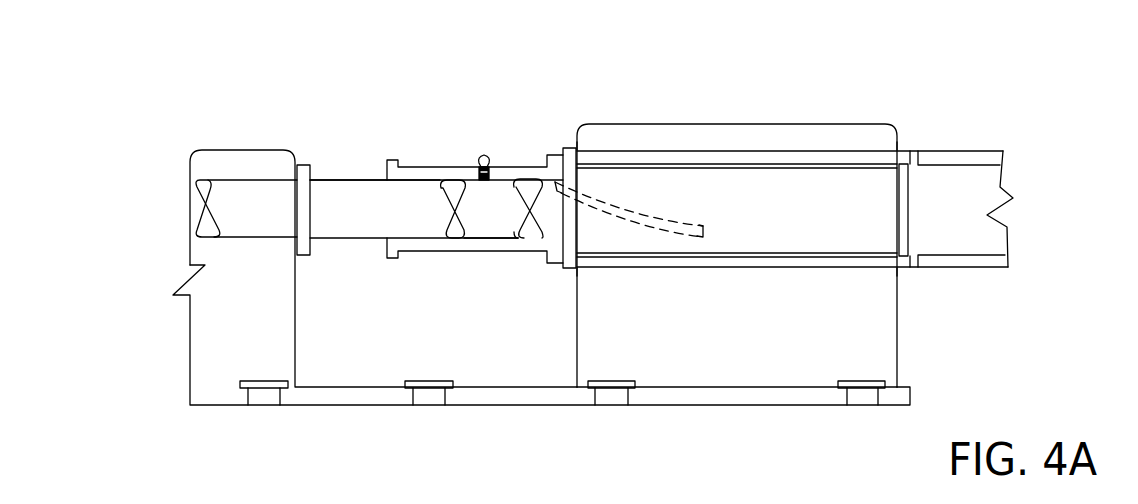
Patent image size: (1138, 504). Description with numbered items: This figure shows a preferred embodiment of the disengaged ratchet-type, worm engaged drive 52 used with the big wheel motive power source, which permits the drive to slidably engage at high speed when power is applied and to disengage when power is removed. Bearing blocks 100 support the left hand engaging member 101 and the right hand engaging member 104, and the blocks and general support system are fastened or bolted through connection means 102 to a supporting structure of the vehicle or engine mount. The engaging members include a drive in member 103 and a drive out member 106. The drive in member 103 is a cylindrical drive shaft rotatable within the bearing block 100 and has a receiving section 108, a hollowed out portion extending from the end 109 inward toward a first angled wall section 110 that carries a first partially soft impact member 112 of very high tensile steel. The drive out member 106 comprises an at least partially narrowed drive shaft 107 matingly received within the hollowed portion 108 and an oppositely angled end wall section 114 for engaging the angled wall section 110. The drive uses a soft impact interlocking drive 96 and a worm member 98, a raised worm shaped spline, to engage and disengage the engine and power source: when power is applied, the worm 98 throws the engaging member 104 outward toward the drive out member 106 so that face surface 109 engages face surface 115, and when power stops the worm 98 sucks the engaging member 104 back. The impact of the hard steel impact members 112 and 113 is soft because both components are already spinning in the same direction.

The worm engaged drive 52 is at (545, 94).
The soft impact interlocking drive 96 is at (518, 165).
The worm member 98 is at (628, 208).
The bearing block 100 is at (262, 331).
The left hand engaging member 101 is at (225, 172).
The connection means 102 is at (263, 398).
The drive in member 103 is at (869, 145).
The right hand engaging member 104 is at (758, 207).
The drive out member 106 is at (357, 178).
The narrowed drive shaft 107 is at (368, 213).
The receiving section 108 is at (492, 218).
The end of the drive in member 109 is at (387, 177).
The first angled wall section 110 is at (527, 227).
The first partially soft impact member 112 is at (528, 185).
The impact member 113 is at (450, 236).
The oppositely angled end wall section 114 is at (458, 195).
The face surface 115 is at (311, 172).